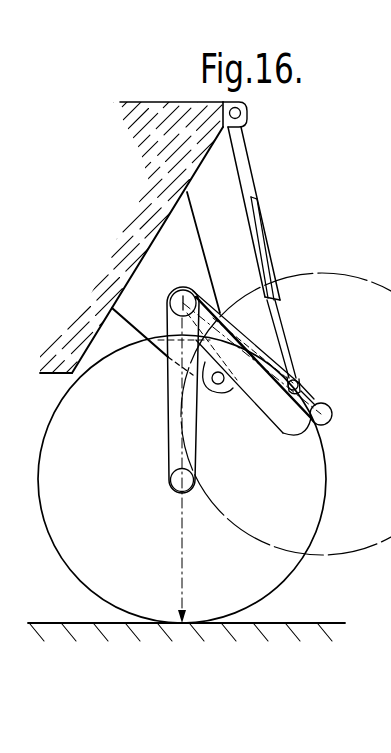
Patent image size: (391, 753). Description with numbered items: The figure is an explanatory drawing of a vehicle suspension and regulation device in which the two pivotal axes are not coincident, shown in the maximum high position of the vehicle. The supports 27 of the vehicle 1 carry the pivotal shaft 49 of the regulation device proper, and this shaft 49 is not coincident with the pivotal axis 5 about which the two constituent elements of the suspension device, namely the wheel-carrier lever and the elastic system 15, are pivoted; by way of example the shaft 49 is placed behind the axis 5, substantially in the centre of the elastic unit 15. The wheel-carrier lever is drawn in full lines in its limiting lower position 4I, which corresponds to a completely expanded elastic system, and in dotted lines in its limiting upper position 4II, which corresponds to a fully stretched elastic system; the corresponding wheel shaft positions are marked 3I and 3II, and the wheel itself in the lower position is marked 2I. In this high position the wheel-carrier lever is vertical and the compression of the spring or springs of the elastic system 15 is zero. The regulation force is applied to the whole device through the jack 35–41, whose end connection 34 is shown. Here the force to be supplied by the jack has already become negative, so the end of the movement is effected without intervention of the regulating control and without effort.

The vehicle 1 is at (183, 176).
The supports 27 is at (197, 239).
The jack 41 is at (255, 158).
The jack 35 is at (286, 331).
The pivot pin 34 is at (297, 377).
The limiting upper position of the wheel-carrier lever 4II is at (311, 388).
The wheel axle in position II 3II is at (333, 416).
The pivotal axis 5 is at (203, 291).
The elastic system 15 is at (270, 422).
The pivotal shaft 49 is at (222, 394).
The limiting lower position of the wheel-carrier lever 4I is at (167, 439).
The wheel axle in position I 3I is at (172, 484).
The wheel in position I 2I is at (65, 565).